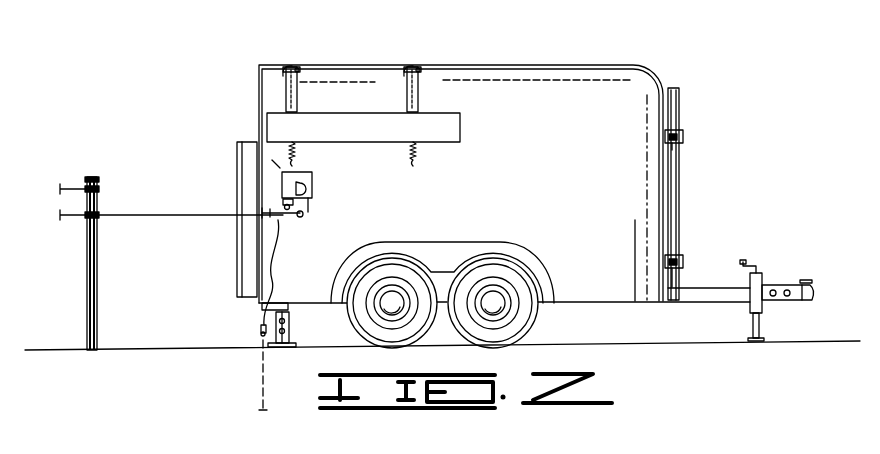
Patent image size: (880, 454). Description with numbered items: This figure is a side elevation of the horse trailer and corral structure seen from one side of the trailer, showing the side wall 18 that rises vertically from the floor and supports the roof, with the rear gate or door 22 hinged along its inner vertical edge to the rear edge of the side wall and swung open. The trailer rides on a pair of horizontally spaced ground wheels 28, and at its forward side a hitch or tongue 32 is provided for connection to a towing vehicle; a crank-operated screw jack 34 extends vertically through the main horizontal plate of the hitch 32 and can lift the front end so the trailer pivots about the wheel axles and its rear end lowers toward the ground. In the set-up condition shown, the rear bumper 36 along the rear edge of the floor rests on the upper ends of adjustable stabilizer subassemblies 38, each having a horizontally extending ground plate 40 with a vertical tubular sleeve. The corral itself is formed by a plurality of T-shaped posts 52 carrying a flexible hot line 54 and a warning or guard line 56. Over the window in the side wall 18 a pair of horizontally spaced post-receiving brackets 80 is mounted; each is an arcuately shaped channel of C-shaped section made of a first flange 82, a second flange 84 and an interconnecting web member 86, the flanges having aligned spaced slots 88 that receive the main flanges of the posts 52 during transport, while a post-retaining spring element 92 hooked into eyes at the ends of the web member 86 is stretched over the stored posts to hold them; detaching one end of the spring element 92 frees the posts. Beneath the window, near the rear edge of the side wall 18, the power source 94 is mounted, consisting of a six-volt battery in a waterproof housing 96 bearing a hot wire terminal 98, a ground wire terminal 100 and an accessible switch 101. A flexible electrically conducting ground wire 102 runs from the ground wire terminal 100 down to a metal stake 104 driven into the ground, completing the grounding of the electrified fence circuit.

The side wall 18 is at (514, 158).
The gate or door 22 is at (245, 231).
The ground wheels 28 is at (378, 336).
The hitch or tongue 32 is at (783, 281).
The crank-operated screw jack 34 is at (746, 314).
The rear bumper 36 is at (281, 299).
The adjustable stabilizer subassembly 38 is at (296, 323).
The ground plate 40 is at (283, 349).
The post 52 is at (86, 291).
The flexible hot line 54 is at (125, 218).
The warning or guard line 56 is at (70, 188).
The post-receiving bracket 80 is at (285, 94).
The first flange 82 is at (284, 73).
The second flange 84 is at (300, 70).
The web member 86 is at (290, 67).
The slots 88 is at (664, 139).
The post-retaining spring element 92 is at (296, 134).
The power source 94 is at (277, 165).
The waterproof housing 96 is at (313, 179).
The hot wire terminal 98 is at (312, 211).
The ground wire terminal 100 is at (283, 206).
The switch 101 is at (313, 192).
The ground wire 102 is at (278, 256).
The metal stake 104 is at (260, 334).